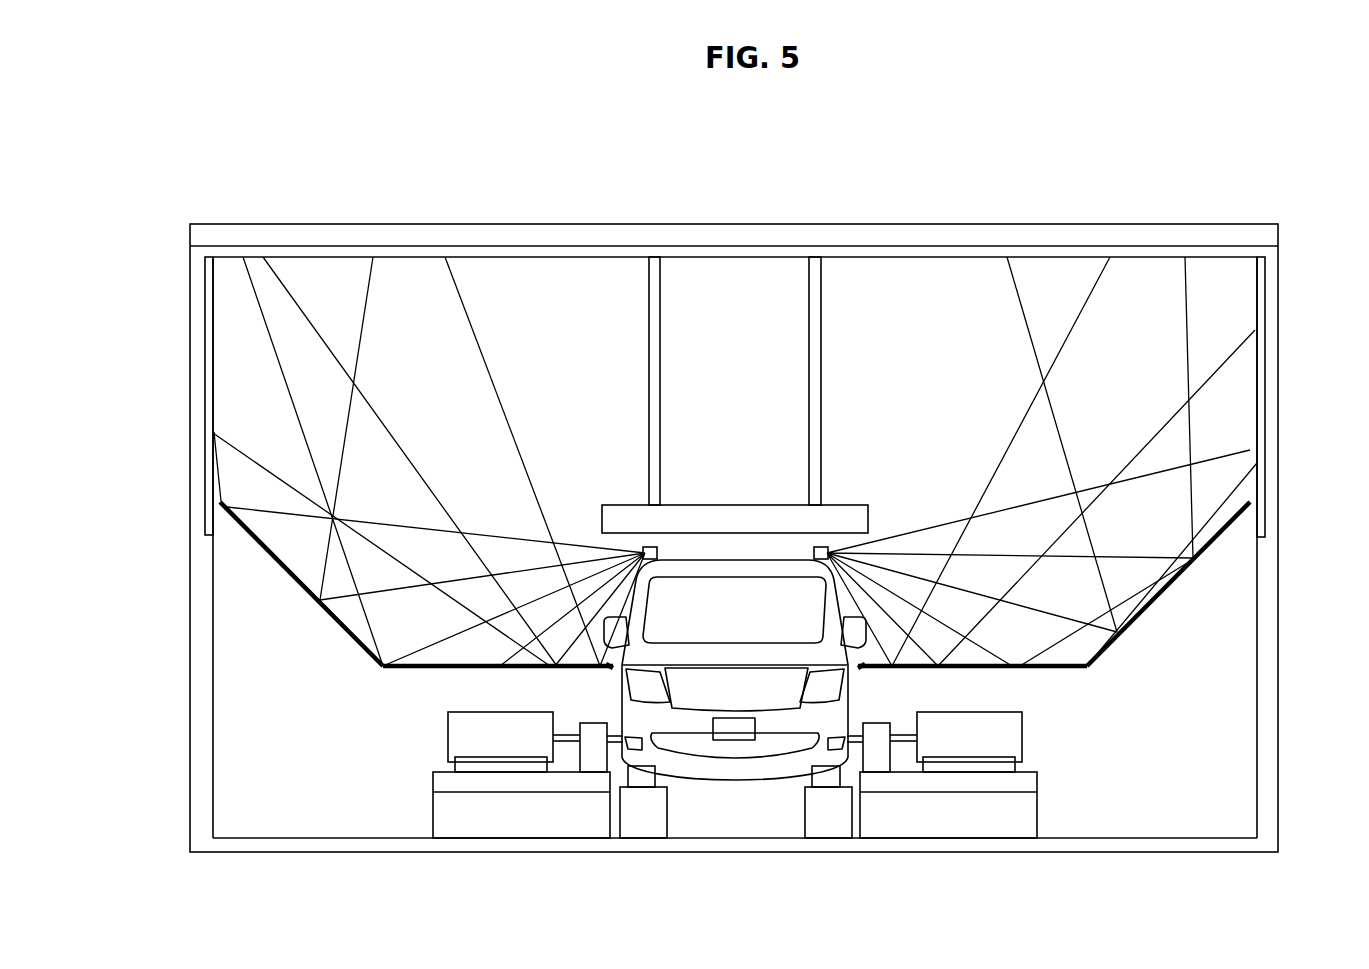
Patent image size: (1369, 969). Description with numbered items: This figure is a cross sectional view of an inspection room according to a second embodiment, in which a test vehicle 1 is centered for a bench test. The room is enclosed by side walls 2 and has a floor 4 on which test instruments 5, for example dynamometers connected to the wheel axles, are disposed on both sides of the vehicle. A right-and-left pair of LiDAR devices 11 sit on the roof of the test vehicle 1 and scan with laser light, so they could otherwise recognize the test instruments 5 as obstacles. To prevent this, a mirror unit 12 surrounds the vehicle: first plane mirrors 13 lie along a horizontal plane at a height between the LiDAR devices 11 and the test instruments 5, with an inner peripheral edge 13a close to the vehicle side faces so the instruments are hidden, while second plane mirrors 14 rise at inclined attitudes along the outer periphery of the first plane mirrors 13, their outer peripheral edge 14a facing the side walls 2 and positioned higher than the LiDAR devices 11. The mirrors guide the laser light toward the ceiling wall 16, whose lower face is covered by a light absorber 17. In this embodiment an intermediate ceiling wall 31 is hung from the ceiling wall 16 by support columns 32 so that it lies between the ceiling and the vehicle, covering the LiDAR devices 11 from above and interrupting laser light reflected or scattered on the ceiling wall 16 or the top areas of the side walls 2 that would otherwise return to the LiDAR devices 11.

The test vehicle 1 is at (737, 547).
The side walls 2 is at (202, 717).
The floor 4 is at (1192, 837).
The test instruments 5 is at (455, 737).
The LiDAR devices 11 is at (646, 547).
The mirror unit 12 is at (735, 639).
The first plane mirrors 13 is at (427, 668).
The inner peripheral edge 13a is at (613, 668).
The second plane mirrors 14 is at (285, 565).
The outer peripheral edge 14a is at (220, 502).
The ceiling wall 16 is at (657, 235).
The light absorber 17 is at (593, 258).
The intermediate ceiling wall 31 is at (725, 518).
The support columns 32 is at (652, 345).